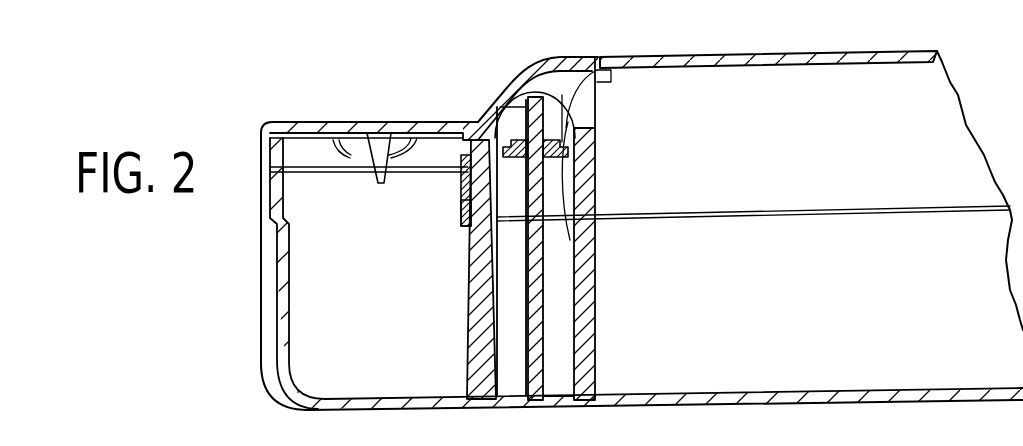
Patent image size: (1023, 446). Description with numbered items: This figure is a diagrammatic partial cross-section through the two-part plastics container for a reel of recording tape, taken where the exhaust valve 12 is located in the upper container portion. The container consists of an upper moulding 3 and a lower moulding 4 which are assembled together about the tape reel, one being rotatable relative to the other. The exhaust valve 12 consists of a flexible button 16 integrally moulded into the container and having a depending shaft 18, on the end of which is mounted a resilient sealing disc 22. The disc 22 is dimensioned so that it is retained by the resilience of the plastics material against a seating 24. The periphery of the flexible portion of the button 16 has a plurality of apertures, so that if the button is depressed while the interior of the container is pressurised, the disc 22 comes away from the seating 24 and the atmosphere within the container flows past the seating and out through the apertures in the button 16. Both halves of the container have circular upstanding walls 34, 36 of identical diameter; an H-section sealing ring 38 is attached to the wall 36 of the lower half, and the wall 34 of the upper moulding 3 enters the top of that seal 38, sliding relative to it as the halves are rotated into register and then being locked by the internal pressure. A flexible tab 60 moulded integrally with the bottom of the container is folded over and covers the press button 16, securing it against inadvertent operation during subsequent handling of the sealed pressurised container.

The upper moulding 3 is at (852, 30).
The lower moulding 4 is at (723, 397).
The exhaust valve 12 is at (601, 166).
The flexible button 16 is at (532, 128).
The depending shaft 18 is at (530, 128).
The resilient sealing disc 22 is at (578, 228).
The seating 24 is at (575, 146).
The circular upstanding wall 34 is at (475, 184).
The circular upstanding wall 36 is at (476, 308).
The H-section sealing ring 38 is at (462, 218).
The flexible tab 60 is at (305, 127).